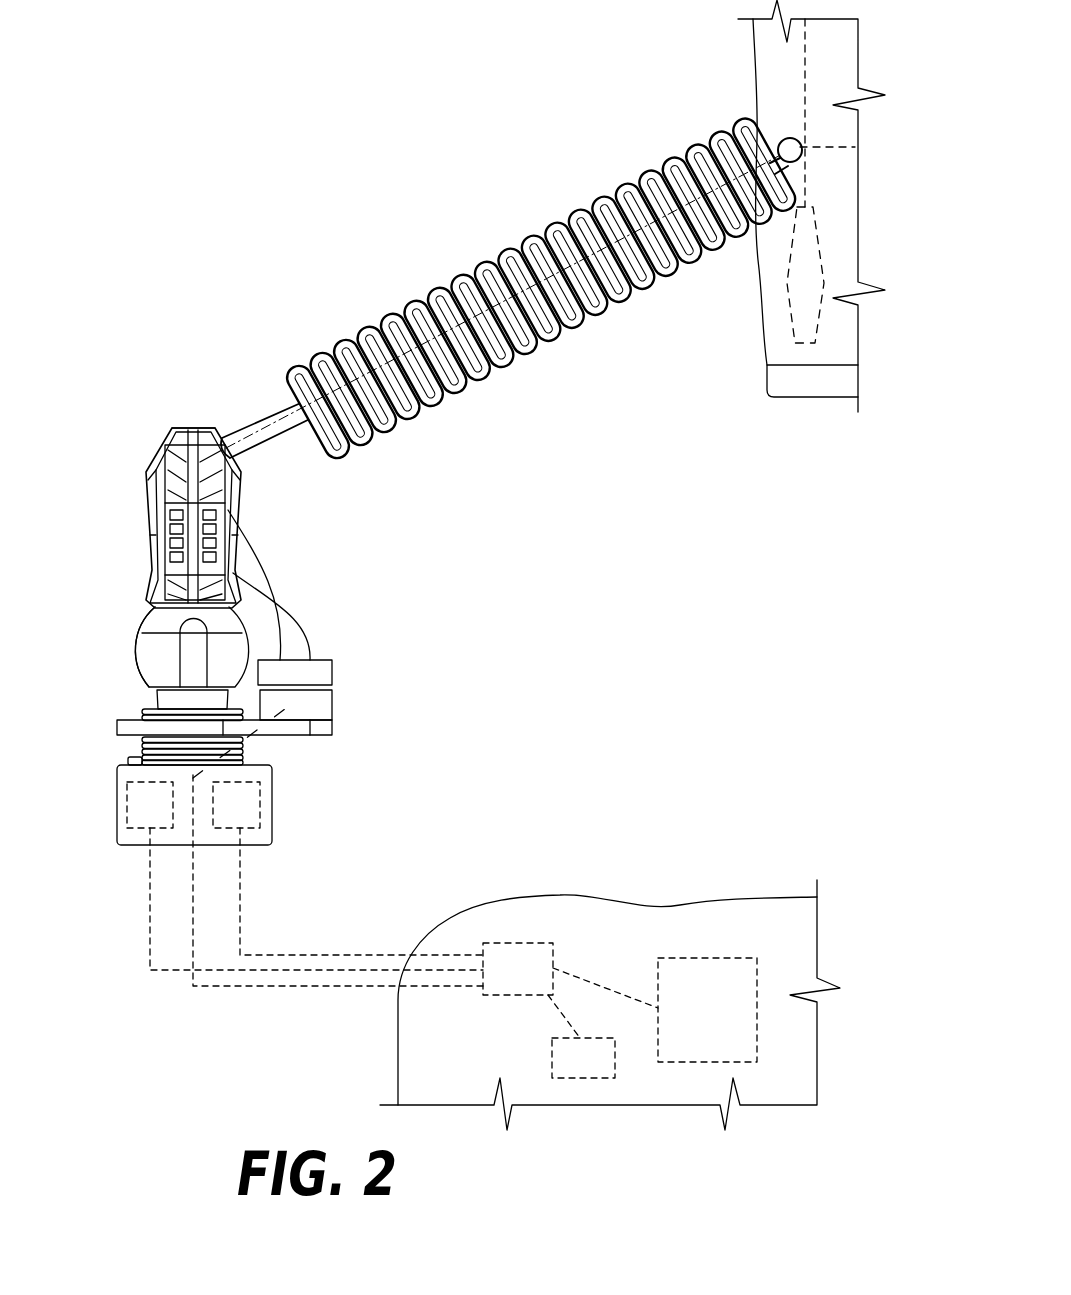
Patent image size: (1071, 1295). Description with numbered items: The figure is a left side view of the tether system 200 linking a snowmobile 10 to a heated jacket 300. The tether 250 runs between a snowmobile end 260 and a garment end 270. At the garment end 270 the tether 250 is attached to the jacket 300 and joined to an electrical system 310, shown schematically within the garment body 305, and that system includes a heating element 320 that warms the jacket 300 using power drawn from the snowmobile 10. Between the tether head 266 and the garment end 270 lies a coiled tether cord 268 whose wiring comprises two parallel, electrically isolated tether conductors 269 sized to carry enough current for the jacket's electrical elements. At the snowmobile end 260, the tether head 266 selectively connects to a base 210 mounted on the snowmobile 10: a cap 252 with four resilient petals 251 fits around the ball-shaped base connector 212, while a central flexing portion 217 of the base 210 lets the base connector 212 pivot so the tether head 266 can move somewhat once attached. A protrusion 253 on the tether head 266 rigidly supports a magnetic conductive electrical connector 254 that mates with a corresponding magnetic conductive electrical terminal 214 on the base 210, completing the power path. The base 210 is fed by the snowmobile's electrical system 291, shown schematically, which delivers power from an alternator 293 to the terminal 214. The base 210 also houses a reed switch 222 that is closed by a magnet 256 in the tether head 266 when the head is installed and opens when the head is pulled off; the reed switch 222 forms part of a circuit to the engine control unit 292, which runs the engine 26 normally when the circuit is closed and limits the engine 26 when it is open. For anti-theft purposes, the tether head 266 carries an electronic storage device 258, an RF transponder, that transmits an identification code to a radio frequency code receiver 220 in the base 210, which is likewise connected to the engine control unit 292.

The snowmobile 10 is at (748, 848).
The engine 26 is at (685, 1062).
The tether system 200 is at (175, 198).
The base 210 is at (352, 772).
The base connector 212 is at (195, 638).
The electrical terminal 214 is at (318, 712).
The central flexing portion 217 is at (138, 742).
The radio frequency code receiver 220 is at (262, 818).
The reed switch 222 is at (127, 822).
The tether 250 is at (380, 245).
The resilient petals 251 is at (237, 655).
The cap 252 is at (150, 648).
The protrusion 253 is at (262, 577).
The electrical connector 254 is at (318, 678).
The magnet 256 is at (182, 440).
The electronic storage device 258 is at (186, 446).
The snowmobile end 260 is at (235, 425).
The tether head 266 is at (188, 410).
The coiled tether cord 268 is at (565, 352).
The tether conductors 269 is at (530, 255).
The garment end 270 is at (772, 130).
The electrical system 291 is at (518, 1035).
The engine control unit 292 is at (518, 943).
The alternator 293 is at (600, 1078).
The jacket 300 is at (722, 408).
The garment body 305 is at (800, 392).
The electrical system 310 is at (798, 85).
The heating element 320 is at (800, 305).